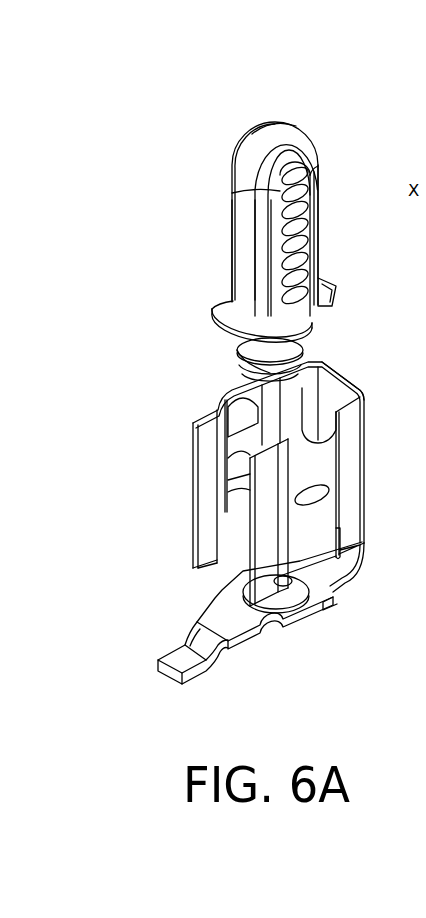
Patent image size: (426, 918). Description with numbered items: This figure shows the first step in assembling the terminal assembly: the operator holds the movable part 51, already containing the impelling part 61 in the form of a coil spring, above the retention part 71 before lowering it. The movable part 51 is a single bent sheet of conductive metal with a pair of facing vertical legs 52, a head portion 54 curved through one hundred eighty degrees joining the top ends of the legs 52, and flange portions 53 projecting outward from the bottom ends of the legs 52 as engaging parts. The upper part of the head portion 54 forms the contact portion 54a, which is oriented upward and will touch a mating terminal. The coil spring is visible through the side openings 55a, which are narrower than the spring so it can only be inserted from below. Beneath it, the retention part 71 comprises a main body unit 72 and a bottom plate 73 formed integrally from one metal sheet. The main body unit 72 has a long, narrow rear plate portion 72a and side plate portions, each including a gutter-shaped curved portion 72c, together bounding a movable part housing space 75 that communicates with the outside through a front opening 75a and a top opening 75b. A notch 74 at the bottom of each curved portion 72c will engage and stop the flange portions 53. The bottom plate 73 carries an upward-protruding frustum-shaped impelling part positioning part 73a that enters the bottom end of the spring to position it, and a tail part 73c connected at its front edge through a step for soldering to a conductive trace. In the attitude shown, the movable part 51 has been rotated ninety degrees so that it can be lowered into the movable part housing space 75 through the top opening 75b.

The movable part 51 is at (320, 188).
The legs 52 is at (232, 212).
The flange portion 53 is at (336, 288).
The head portion 54 is at (318, 131).
The contact portion 54a is at (283, 126).
The side openings 55a is at (312, 250).
The impelling part 61 is at (312, 316).
The retention part 71 is at (284, 524).
The main body unit 72 is at (364, 436).
The rear plate portion 72a is at (356, 386).
The curved portion 72c is at (330, 502).
The bottom plate 73 is at (260, 629).
The impelling part positioning part 73a is at (290, 598).
The tail part 73c is at (186, 678).
The notch 74 is at (235, 528).
The movable part housing space 75 is at (322, 382).
The front opening 75a is at (205, 484).
The top opening 75b is at (228, 390).